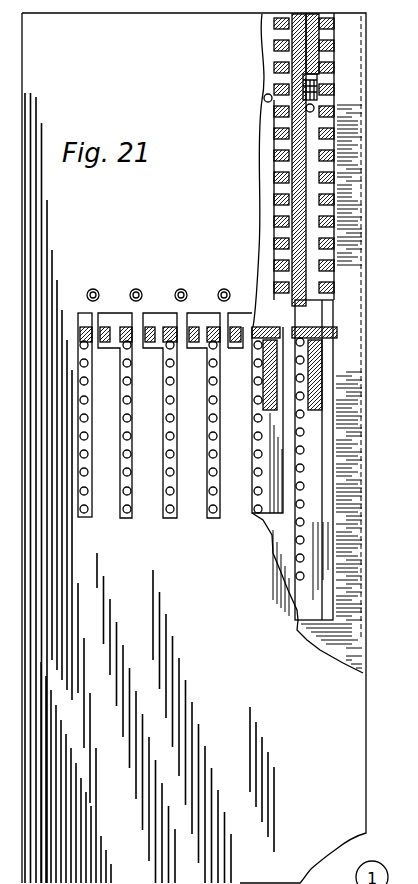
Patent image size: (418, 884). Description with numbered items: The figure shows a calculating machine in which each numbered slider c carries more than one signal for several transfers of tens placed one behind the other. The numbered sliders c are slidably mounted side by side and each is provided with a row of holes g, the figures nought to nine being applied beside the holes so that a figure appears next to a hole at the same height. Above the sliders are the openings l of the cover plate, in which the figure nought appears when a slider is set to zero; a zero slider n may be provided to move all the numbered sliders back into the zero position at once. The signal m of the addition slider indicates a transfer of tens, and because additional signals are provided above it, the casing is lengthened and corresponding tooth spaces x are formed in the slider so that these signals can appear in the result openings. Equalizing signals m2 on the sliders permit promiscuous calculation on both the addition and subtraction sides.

The signal m is at (332, 75).
The equalizing signal m2 is at (322, 355).
The tooth space x is at (409, 115).
The holes g is at (305, 435).
The zero slider n is at (404, 476).
The opening l is at (178, 292).
The numbered slider c is at (280, 517).